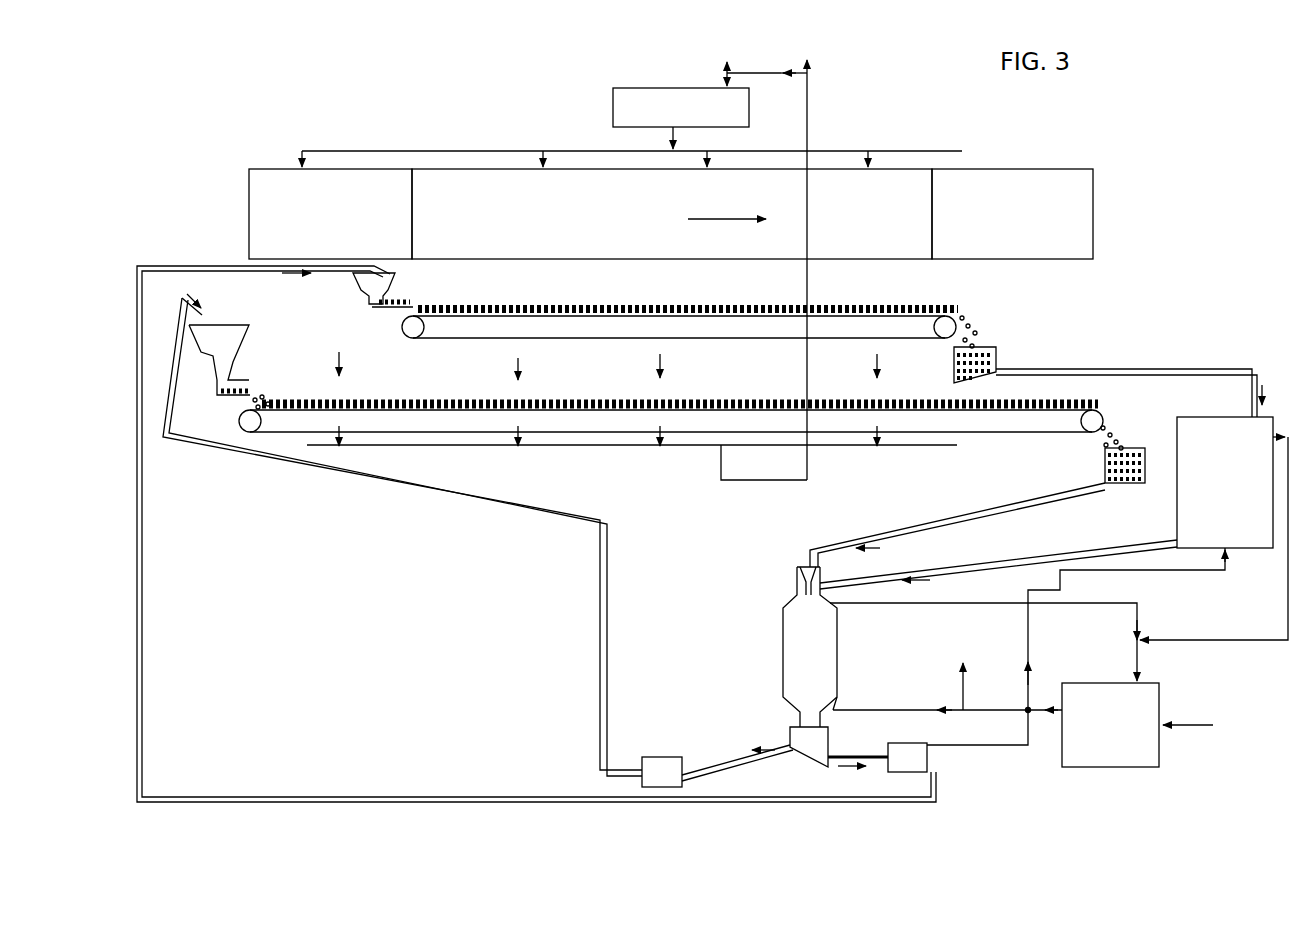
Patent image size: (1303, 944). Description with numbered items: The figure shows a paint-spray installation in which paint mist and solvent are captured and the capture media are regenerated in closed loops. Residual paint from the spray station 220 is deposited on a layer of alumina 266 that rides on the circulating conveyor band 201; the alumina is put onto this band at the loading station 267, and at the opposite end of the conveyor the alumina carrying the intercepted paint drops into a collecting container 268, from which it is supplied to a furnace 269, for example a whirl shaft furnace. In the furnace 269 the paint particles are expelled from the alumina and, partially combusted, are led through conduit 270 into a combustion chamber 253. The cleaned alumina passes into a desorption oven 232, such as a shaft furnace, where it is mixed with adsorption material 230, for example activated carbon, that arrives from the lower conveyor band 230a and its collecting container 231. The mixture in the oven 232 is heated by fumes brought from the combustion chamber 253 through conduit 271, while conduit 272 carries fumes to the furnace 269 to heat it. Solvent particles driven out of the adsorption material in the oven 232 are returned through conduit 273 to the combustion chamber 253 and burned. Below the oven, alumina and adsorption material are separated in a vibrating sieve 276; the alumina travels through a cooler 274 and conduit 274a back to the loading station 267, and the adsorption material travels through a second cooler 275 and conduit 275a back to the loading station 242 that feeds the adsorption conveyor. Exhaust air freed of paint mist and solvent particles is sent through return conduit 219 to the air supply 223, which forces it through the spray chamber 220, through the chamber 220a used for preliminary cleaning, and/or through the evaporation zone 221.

The circulating conveyor band 201 is at (595, 340).
The return conduit 219 is at (807, 125).
The spray station 220 is at (515, 185).
The chamber 220a is at (270, 193).
The evaporation zone 221 is at (982, 190).
The air supply 223 is at (645, 103).
The adsorption material 230 is at (833, 400).
The conveyor band 230a is at (990, 435).
The collecting container 231 is at (1120, 485).
The oven 232 is at (790, 655).
The loading station 242 is at (232, 351).
The combustion chamber 253 is at (1120, 757).
The layer of alumina 266 is at (615, 305).
The loading station 267 is at (363, 286).
The collecting container 268 is at (997, 347).
The furnace 269 is at (1210, 432).
The conduit 270 is at (1228, 643).
The conduit 271 is at (950, 712).
The conduit 272 is at (1030, 648).
The conduit 273 is at (995, 605).
The cooler 274 is at (930, 755).
The conduit 274a is at (376, 802).
The cooler 275 is at (659, 756).
The conduit 275a is at (530, 510).
The vibrating sieve 276 is at (790, 738).